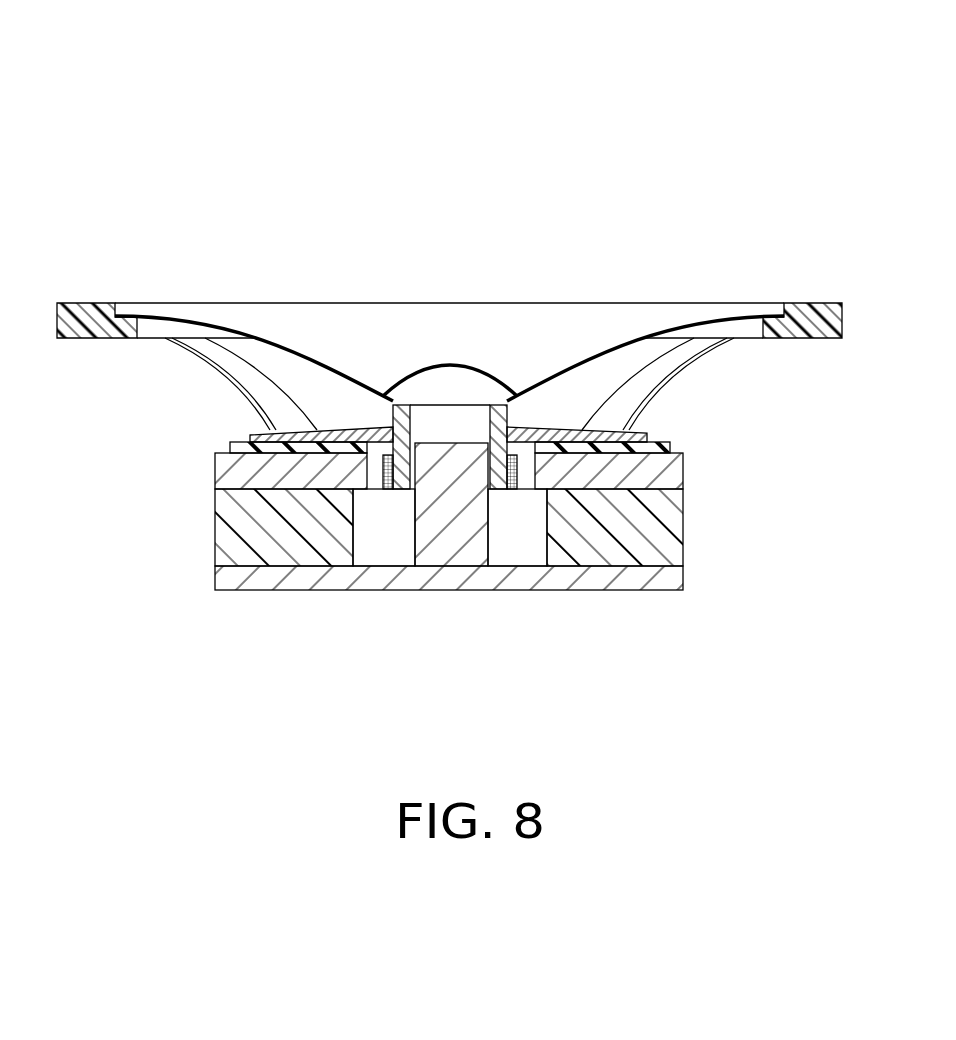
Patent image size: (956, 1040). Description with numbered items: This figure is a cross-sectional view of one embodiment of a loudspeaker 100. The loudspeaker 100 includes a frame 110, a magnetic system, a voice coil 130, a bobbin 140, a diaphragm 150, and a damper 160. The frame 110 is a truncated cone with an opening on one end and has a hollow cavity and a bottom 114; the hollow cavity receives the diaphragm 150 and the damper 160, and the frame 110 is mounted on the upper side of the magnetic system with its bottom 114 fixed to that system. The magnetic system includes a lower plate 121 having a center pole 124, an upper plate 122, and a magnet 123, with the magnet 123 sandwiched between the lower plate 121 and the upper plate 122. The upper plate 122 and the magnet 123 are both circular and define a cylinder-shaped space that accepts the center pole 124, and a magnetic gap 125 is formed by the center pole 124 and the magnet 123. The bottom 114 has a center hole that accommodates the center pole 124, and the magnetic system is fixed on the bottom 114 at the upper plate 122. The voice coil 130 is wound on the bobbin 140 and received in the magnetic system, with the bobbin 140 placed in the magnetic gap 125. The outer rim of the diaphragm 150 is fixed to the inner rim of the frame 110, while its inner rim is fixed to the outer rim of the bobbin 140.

The loudspeaker 100 is at (455, 106).
The frame 110 is at (88, 303).
The bottom 114 is at (660, 448).
The lower plate 121 is at (677, 582).
The upper plate 122 is at (670, 470).
The magnet 123 is at (665, 523).
The center pole 124 is at (430, 521).
The magnetic gap 125 is at (498, 515).
The voice coil 130 is at (383, 472).
The bobbin 140 is at (393, 421).
The diaphragm 150 is at (318, 367).
The damper 160 is at (647, 433).